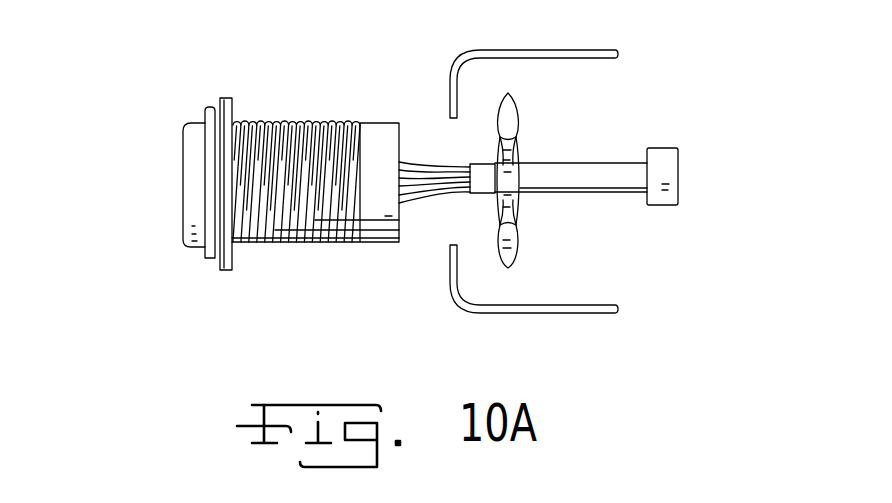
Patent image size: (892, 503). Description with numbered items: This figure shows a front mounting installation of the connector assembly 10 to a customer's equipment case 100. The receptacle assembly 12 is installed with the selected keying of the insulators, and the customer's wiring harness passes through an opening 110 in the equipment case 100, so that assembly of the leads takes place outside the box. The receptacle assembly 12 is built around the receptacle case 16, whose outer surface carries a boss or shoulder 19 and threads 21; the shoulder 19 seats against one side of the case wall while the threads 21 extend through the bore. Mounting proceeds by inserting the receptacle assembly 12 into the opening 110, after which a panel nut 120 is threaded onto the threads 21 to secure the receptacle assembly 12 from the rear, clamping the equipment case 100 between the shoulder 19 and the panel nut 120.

The connector assembly 10 is at (178, 95).
The receptacle assembly 12 is at (188, 249).
The boss or shoulder 19 is at (218, 273).
The threads 21 is at (282, 123).
The receptacle case 16 is at (373, 130).
The panel nut 120 is at (508, 116).
The opening 110 is at (447, 130).
The equipment case 100 is at (612, 50).